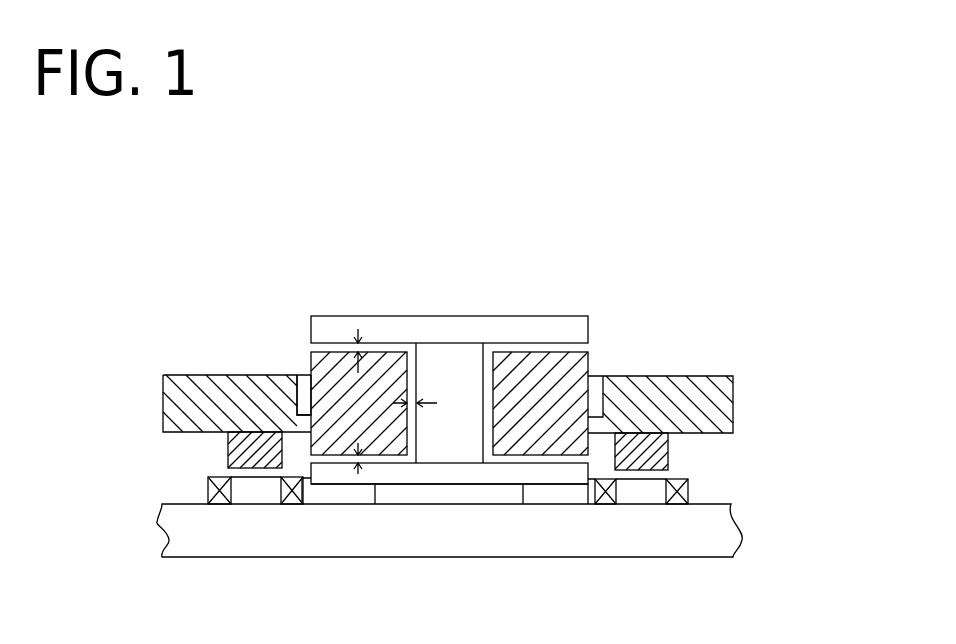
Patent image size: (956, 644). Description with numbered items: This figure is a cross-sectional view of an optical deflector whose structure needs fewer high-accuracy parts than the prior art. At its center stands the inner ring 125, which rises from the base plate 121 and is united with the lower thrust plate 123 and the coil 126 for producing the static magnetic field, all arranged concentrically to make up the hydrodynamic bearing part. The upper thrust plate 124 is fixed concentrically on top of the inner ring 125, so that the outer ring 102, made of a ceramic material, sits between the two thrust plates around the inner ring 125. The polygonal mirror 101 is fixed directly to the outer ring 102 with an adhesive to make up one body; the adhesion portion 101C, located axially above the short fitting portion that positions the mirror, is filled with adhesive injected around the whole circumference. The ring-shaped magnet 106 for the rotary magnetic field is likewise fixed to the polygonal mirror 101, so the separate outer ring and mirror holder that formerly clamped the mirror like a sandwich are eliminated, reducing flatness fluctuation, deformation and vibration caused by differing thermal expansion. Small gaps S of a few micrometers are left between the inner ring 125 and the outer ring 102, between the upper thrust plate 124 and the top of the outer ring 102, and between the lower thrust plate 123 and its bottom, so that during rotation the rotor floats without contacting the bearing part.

The polygonal mirror 101 is at (722, 402).
The adhesion portion 101C is at (305, 366).
The outer ring 102 is at (578, 367).
The ring-shaped magnet 106 is at (672, 452).
The base plate 121 is at (537, 542).
The lower thrust plate 123 is at (440, 477).
The upper thrust plate 124 is at (523, 322).
The inner ring 125 is at (455, 356).
The coil 126 is at (690, 493).
The gap S is at (357, 347).